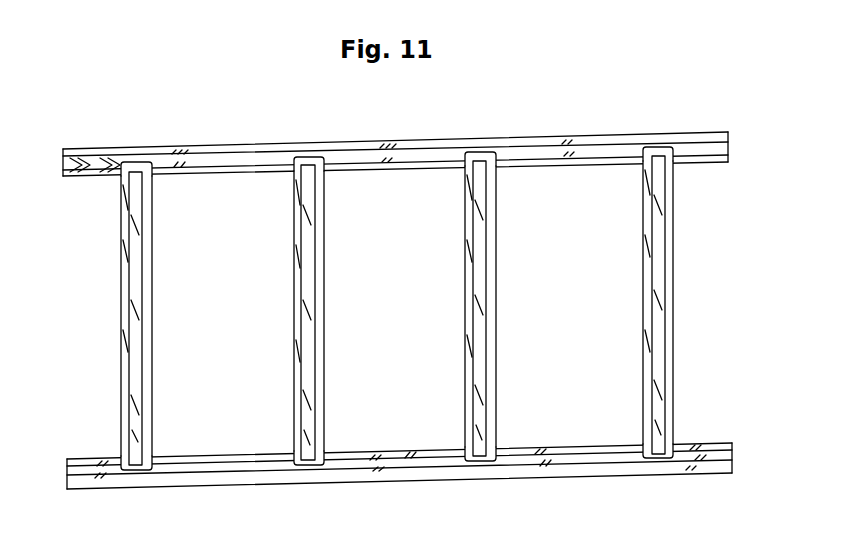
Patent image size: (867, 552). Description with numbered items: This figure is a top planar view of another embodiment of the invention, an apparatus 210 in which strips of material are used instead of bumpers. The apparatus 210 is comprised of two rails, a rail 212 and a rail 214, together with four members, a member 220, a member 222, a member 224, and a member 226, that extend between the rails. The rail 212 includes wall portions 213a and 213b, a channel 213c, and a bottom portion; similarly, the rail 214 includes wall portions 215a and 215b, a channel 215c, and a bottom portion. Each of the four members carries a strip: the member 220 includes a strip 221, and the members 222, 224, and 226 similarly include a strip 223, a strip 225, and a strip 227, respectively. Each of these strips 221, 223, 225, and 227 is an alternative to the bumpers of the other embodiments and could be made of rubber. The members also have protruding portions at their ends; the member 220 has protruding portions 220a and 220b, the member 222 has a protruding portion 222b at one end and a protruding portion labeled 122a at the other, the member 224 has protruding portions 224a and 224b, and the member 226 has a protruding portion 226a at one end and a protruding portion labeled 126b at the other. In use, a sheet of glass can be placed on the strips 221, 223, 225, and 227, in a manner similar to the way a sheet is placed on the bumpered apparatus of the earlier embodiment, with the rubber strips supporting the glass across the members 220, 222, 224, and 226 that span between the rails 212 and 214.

The apparatus 210 is at (593, 82).
The rail 212 is at (395, 153).
The wall portion 213a is at (267, 146).
The wall portion 213b is at (247, 173).
The channel 213c is at (210, 164).
The rail 214 is at (399, 472).
The wall portion 215a is at (280, 488).
The wall portion 215b is at (232, 470).
The channel 215c is at (233, 486).
The member 220 is at (119, 318).
The protruding portion 220a is at (137, 161).
The protruding portion 220b is at (137, 468).
The strip 221 is at (136, 290).
The member 222 is at (302, 319).
The second cross member upper end 122a is at (315, 152).
The protruding portion 222b is at (318, 468).
The strip 223 is at (306, 282).
The member 224 is at (474, 310).
The protruding portion 224a is at (489, 150).
The protruding portion 224b is at (490, 464).
The strip 225 is at (482, 276).
The member 226 is at (647, 306).
The protruding portion 226a is at (660, 145).
The fourth cross member lower end 126b is at (663, 461).
The strip 227 is at (653, 273).